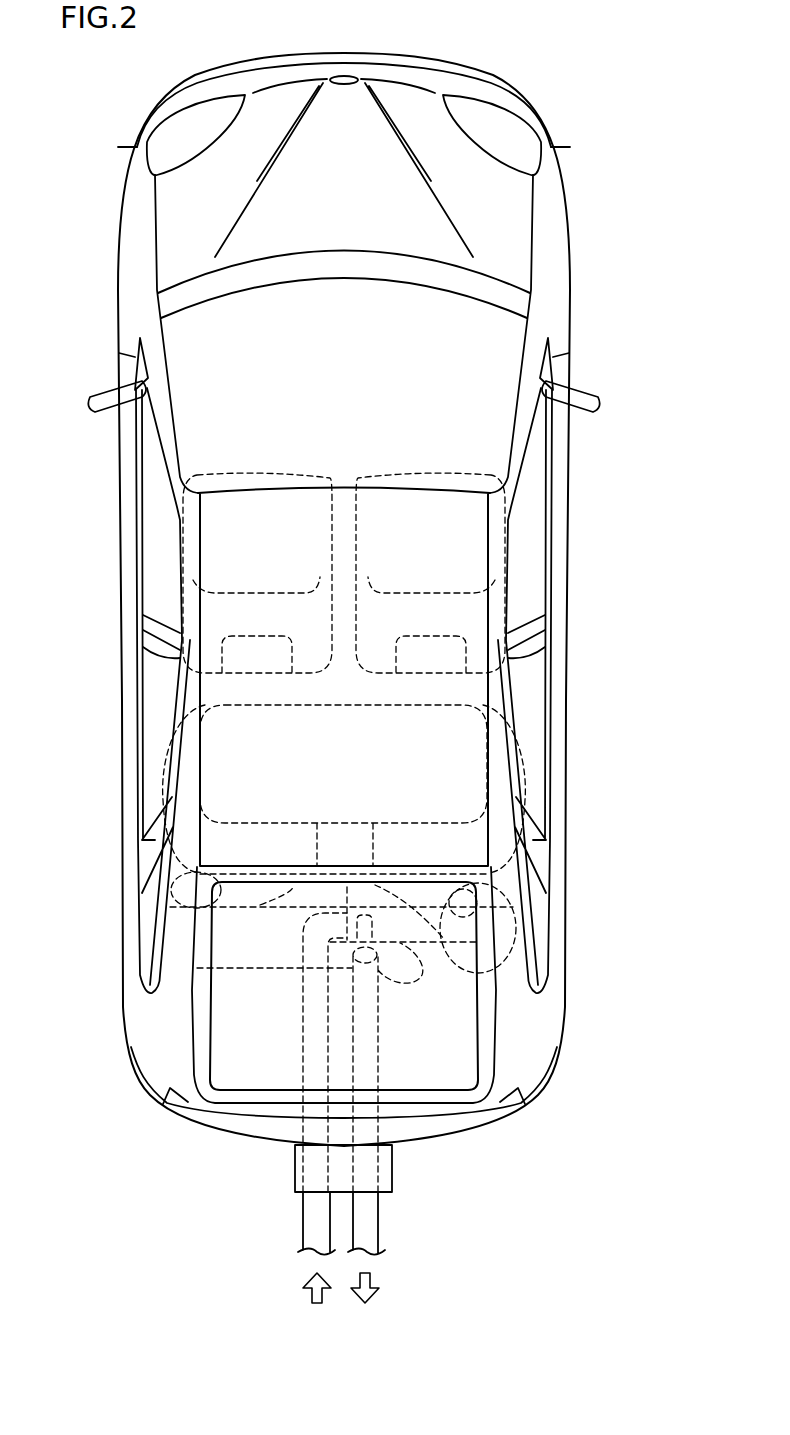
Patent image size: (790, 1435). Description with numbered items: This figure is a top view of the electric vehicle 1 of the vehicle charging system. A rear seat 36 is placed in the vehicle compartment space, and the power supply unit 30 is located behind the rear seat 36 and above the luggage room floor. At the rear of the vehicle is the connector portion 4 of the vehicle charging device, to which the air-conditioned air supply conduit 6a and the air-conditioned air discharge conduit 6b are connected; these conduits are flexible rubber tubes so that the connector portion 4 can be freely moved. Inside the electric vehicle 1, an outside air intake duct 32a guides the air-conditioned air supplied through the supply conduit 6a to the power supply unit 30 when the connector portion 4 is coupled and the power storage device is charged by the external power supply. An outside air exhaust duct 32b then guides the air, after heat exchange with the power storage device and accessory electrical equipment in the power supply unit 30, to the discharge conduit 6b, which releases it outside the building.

The electric vehicle 1 is at (108, 581).
The connector portion 4 is at (387, 1168).
The air-conditioned air supply conduit 6a is at (312, 1222).
The air-conditioned air discharge conduit 6b is at (367, 1222).
The power supply unit 30 is at (253, 957).
The outside air intake duct 32a is at (310, 1058).
The outside air exhaust duct 32b is at (370, 1025).
The rear seat 36 is at (237, 760).